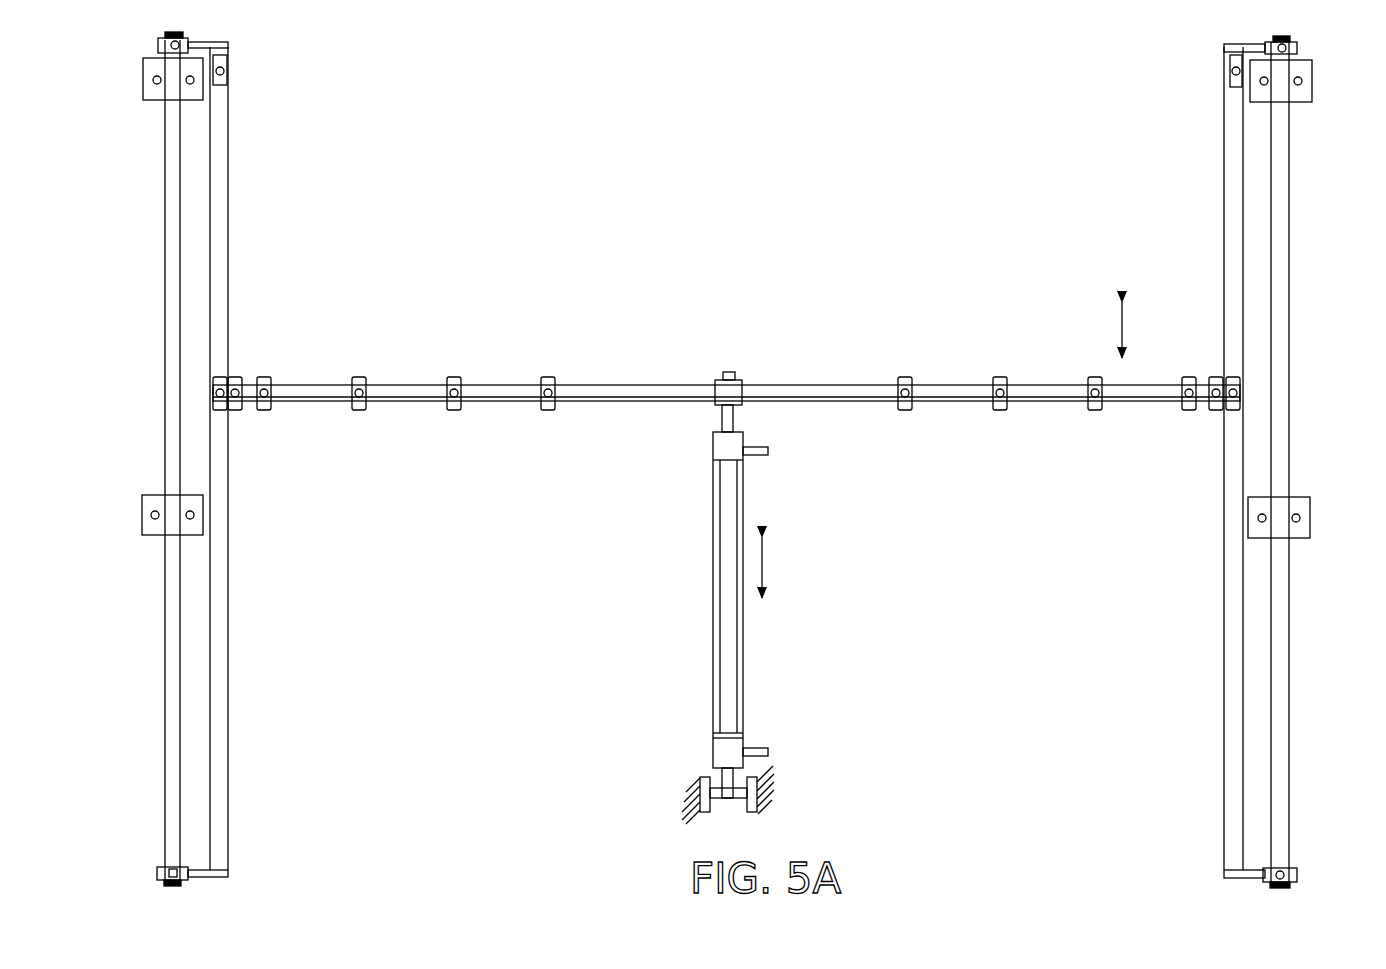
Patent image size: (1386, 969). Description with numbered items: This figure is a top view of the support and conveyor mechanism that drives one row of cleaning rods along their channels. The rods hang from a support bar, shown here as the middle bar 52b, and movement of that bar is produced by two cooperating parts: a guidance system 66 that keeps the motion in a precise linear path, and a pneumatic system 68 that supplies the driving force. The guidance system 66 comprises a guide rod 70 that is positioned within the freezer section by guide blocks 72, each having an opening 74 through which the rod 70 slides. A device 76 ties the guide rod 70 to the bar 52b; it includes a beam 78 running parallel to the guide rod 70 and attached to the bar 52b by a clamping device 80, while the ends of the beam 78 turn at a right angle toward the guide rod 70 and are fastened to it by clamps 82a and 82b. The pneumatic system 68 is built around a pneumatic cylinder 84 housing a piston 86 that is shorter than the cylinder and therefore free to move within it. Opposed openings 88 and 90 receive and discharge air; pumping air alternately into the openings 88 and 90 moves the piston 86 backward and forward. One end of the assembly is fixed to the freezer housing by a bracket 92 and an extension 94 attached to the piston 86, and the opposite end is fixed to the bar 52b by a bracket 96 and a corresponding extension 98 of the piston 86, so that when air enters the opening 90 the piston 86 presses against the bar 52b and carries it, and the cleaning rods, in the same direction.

The middle bar 52b is at (877, 393).
The guidance system 66 is at (1303, 44).
The pneumatic system 68 is at (749, 563).
The guide rod 70 is at (1282, 210).
The guide block 72 is at (1302, 510).
The opening 74 is at (1317, 492).
The attaching device 76 is at (1218, 370).
The beam 78 is at (1223, 202).
The clamping device 80 is at (1232, 378).
The clamp 82a is at (1292, 62).
The clamp 82b is at (1298, 872).
The pneumatic cylinder 84 is at (713, 692).
The piston 86 is at (730, 485).
The opening 88 is at (747, 457).
The opening 90 is at (747, 752).
The bracket 92 is at (758, 797).
The extension 94 is at (727, 778).
The bracket 96 is at (720, 372).
The extension 98 is at (737, 418).